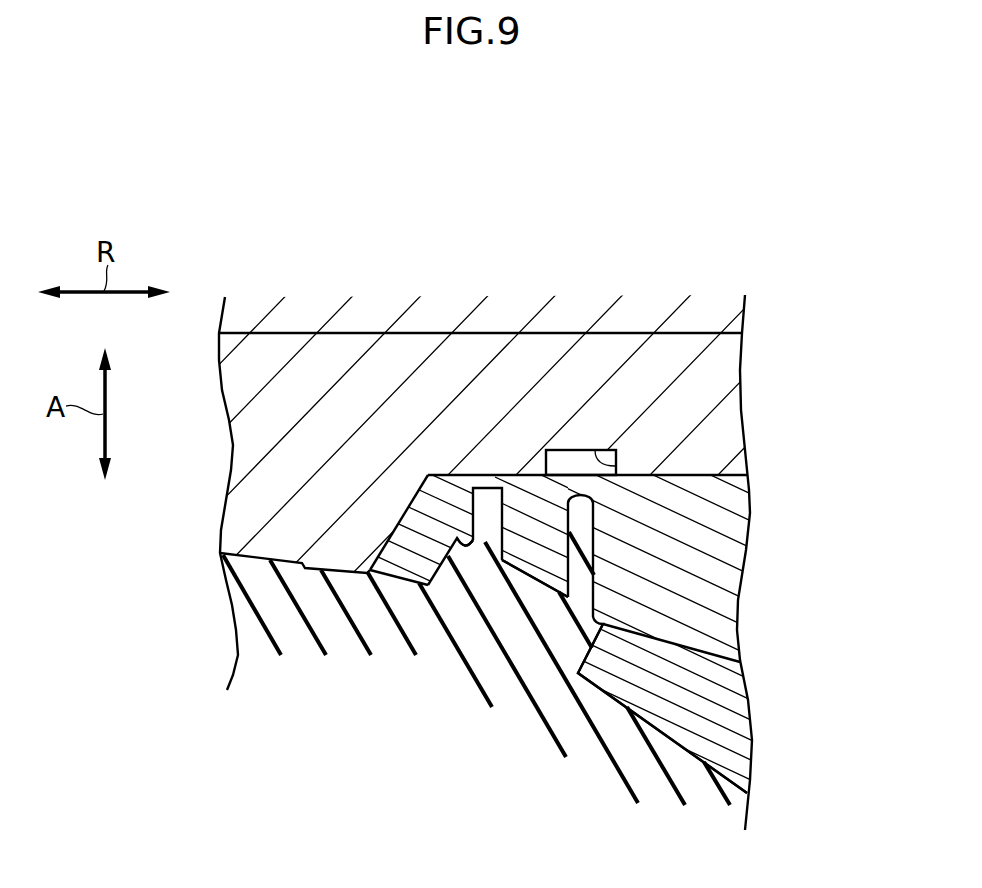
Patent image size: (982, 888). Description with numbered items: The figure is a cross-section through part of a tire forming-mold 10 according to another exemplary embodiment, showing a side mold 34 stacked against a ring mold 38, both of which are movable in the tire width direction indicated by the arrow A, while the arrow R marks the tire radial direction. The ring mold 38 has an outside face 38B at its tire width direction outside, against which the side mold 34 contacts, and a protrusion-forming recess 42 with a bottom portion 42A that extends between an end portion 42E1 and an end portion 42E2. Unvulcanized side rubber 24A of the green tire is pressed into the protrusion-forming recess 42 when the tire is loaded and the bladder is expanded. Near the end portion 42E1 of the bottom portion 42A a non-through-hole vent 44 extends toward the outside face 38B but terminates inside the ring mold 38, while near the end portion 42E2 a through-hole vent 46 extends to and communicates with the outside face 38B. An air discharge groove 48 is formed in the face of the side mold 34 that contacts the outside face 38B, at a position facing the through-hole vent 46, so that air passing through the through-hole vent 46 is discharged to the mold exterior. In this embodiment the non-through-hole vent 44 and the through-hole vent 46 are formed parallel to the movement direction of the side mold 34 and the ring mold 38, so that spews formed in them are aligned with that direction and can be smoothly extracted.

The tire forming-mold 10 is at (410, 226).
The side mold 34 is at (358, 324).
The ring mold 38 is at (489, 573).
The outside face 38B is at (541, 475).
The protrusion-forming recess 42 is at (438, 624).
The bottom portion 42A is at (511, 568).
The end portion 42E1 is at (459, 541).
The end portion 42E2 is at (744, 668).
The non-through-hole vent 44 is at (478, 512).
The through-hole vent 46 is at (578, 475).
The air discharge groove 48 is at (617, 465).
The side rubber 24A is at (462, 665).